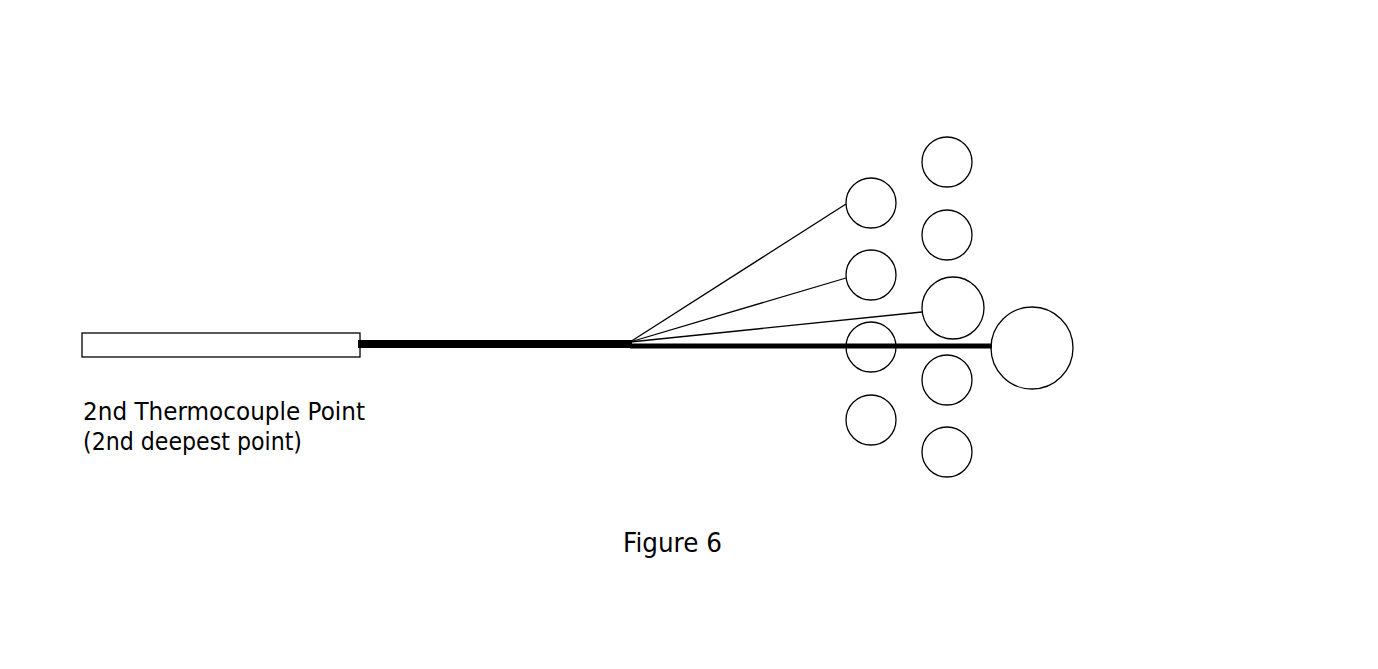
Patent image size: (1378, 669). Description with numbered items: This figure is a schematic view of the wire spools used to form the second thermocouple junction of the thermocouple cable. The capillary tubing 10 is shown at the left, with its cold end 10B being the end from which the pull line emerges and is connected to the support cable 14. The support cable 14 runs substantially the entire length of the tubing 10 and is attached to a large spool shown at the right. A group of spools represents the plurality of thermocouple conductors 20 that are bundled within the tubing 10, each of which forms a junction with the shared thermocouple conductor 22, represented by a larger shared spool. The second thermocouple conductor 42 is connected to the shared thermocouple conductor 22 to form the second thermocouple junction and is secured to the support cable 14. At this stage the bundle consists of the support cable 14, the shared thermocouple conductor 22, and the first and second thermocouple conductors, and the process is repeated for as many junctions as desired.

The capillary tubing 10 is at (262, 285).
The cold end 10B is at (485, 322).
The second thermocouple conductor 42 is at (776, 273).
The thermocouple conductors 20 is at (1062, 259).
The shared thermocouple conductor 22 is at (1140, 229).
The support cable 14 is at (978, 297).